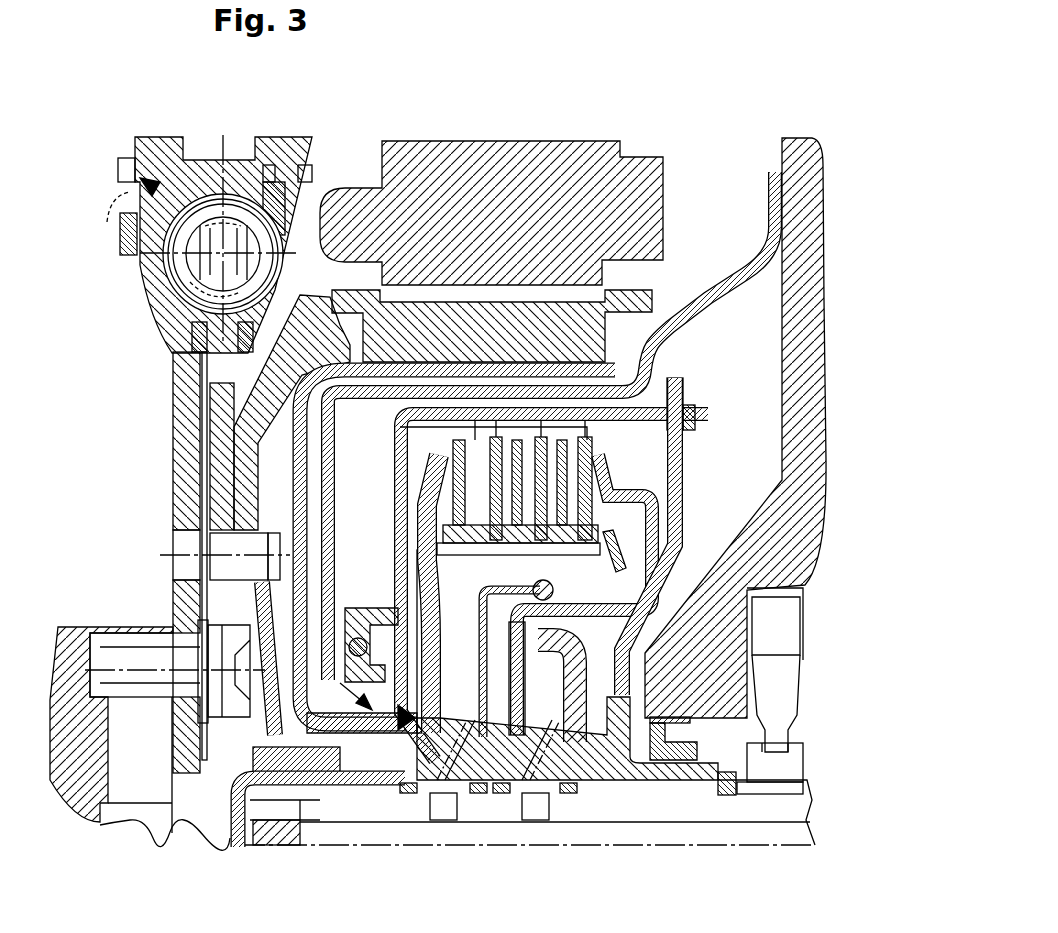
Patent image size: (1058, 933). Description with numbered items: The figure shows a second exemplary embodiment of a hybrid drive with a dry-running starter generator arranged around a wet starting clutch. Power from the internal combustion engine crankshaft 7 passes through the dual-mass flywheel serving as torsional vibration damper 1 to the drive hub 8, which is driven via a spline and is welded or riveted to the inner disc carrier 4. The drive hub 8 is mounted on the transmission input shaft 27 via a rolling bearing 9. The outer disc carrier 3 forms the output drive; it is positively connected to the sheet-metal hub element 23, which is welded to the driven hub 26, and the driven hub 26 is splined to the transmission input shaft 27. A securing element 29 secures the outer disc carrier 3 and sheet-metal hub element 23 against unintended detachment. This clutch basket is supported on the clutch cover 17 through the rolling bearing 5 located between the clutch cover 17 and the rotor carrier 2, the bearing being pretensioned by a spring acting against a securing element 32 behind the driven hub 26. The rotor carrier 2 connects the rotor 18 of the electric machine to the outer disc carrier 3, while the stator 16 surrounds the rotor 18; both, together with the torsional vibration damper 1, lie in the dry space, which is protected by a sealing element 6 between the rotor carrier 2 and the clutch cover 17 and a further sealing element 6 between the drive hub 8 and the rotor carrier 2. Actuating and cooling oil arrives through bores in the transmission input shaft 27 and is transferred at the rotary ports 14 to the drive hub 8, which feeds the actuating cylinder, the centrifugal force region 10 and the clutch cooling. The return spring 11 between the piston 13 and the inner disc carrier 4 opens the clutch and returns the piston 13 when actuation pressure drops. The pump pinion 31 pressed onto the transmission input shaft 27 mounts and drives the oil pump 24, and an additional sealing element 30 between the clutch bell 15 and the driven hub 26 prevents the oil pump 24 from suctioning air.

The torsional vibration damper 1 is at (148, 282).
The rotor carrier 2 is at (330, 375).
The outer disc carrier 3 is at (390, 447).
The inner disc carrier 4 is at (438, 540).
The rolling bearing 5 is at (368, 610).
The sealing element 6 is at (355, 705).
The crankshaft 7 is at (157, 735).
The drive hub 8 is at (238, 848).
The rolling bearing 9 is at (293, 800).
The centrifugal force region 10 is at (486, 673).
The return spring 11 is at (620, 565).
The piston 13 is at (516, 702).
The rotary port 14 is at (455, 793).
The clutch bell 15 is at (810, 207).
The stator of starter generator 16 is at (515, 170).
The clutch cover 17 is at (712, 276).
The rotor of starter generator 18 is at (492, 326).
The sheet-metal hub element 23 is at (681, 493).
The oil pump 24 is at (776, 674).
The driven hub 26 is at (705, 770).
The transmission input shaft 27 is at (800, 807).
The securing element 29 is at (700, 425).
The sealing element 30 is at (668, 762).
The pump pinion 31 is at (795, 755).
The securing element 32 is at (745, 772).